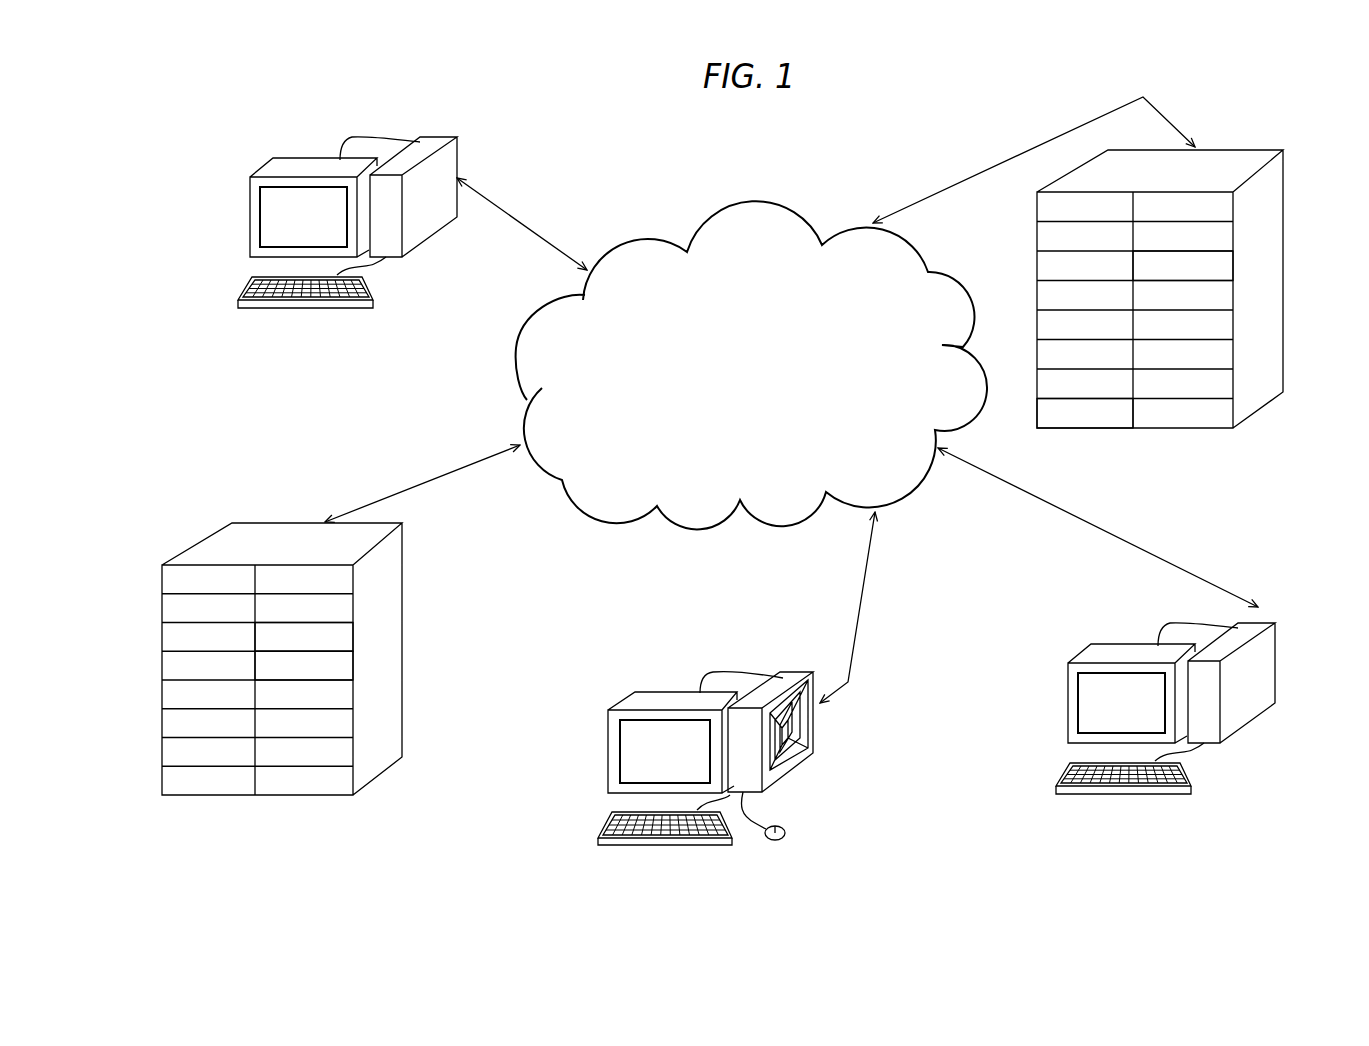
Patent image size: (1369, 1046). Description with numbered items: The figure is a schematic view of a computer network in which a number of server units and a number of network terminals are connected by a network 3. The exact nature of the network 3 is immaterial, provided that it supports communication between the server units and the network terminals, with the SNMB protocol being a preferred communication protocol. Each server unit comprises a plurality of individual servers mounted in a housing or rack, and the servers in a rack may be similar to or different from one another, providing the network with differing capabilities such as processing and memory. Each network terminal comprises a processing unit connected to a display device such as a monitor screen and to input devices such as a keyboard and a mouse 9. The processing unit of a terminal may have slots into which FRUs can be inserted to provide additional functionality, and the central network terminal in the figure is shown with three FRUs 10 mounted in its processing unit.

The network 3 is at (733, 222).
The mouse 9 is at (796, 834).
The FRU 10 is at (797, 722).